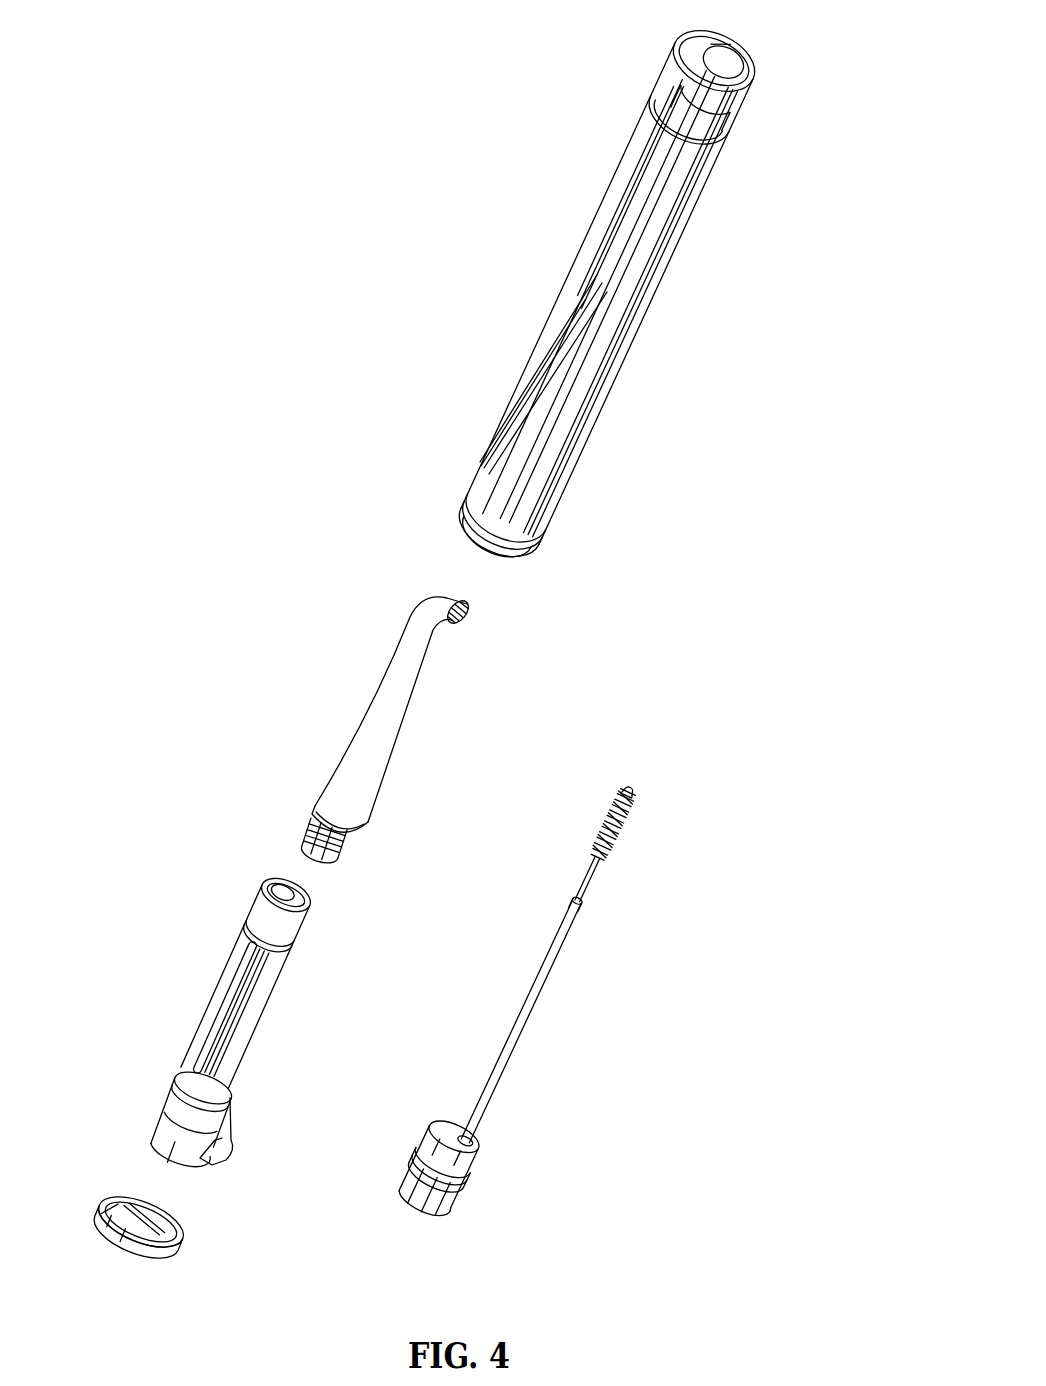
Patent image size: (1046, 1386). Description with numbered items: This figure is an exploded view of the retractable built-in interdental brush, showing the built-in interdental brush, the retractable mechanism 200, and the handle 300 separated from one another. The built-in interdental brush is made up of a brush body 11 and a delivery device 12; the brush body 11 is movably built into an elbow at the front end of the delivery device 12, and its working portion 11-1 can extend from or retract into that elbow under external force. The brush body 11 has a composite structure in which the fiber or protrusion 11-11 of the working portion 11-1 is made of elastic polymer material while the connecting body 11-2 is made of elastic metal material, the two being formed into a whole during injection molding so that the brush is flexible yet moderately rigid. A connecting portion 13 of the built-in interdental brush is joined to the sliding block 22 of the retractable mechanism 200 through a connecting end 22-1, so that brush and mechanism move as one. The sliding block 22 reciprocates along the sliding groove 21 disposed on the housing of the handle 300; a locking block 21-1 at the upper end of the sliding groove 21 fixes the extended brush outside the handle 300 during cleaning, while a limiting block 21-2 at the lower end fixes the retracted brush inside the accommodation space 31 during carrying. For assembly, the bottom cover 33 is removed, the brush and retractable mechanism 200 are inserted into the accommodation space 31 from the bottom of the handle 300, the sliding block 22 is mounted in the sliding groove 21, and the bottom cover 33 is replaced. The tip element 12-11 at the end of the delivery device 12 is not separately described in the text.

The accommodation space 31 is at (680, 38).
The handle 300 is at (651, 146).
The locking block 21-1 is at (690, 126).
The sliding groove 21 is at (572, 473).
The limiting block 21-2 is at (548, 524).
The nozzle outlet tip 12-11 is at (470, 612).
The delivery device 12 is at (379, 723).
The connecting portion 13 is at (312, 832).
The fiber or protrusion 11-11 is at (624, 790).
The connecting body 11-2 is at (578, 878).
The working portion 11-1 is at (618, 833).
The connecting end 22-1 is at (275, 916).
The retractable mechanism 200 is at (238, 968).
The sliding block 22 is at (182, 1112).
The brush body 11 is at (466, 1160).
The bottom cover 33 is at (180, 1257).